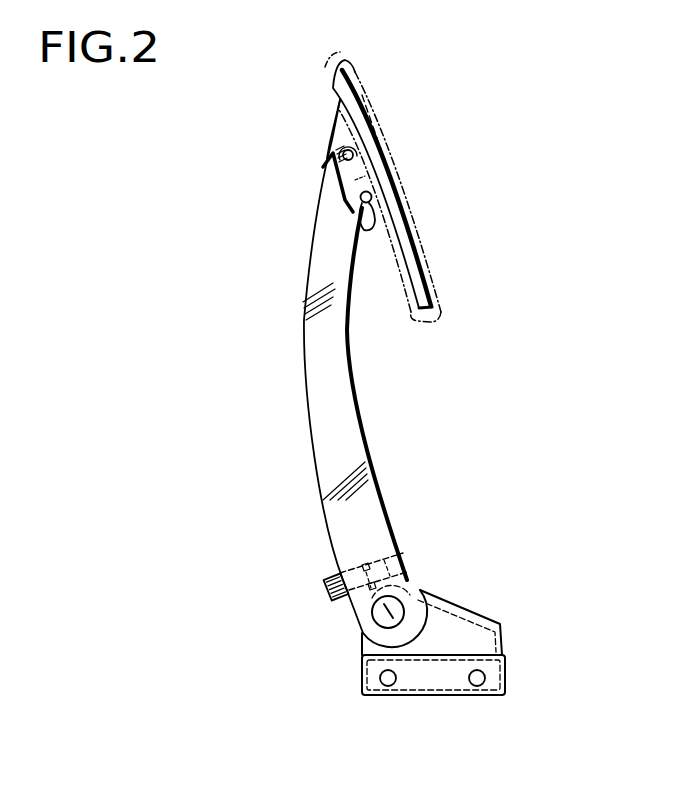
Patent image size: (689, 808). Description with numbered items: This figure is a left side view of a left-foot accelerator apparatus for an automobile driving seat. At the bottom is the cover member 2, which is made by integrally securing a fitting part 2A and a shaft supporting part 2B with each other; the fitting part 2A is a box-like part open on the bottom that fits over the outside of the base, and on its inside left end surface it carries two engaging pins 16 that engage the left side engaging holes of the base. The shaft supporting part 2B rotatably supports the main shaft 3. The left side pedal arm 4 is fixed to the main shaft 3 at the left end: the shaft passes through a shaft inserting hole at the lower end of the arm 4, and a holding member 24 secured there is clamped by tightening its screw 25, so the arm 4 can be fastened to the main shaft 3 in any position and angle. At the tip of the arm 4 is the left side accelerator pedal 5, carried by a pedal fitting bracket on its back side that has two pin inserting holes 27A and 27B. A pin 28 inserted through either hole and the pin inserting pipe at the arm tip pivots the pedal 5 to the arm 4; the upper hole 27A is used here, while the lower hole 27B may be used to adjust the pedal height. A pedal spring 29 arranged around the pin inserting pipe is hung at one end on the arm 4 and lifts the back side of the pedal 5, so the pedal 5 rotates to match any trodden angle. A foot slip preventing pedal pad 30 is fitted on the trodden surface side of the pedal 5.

The cover member 2 is at (451, 637).
The fitting part 2A is at (447, 695).
The shaft supporting part 2B is at (447, 603).
The main shaft 3 is at (384, 615).
The left side pedal arm 4 is at (313, 355).
The left side accelerator pedal 5 is at (427, 257).
The engaging pins 16 is at (390, 690).
The holding member 24 is at (404, 550).
The screw 25 is at (326, 585).
The upper pin inserting hole 27A is at (337, 127).
The lower pin inserting hole 27B is at (362, 228).
The pin 28 is at (343, 150).
The pedal spring 29 is at (338, 168).
The foot slip preventing pedal pad 30 is at (402, 173).